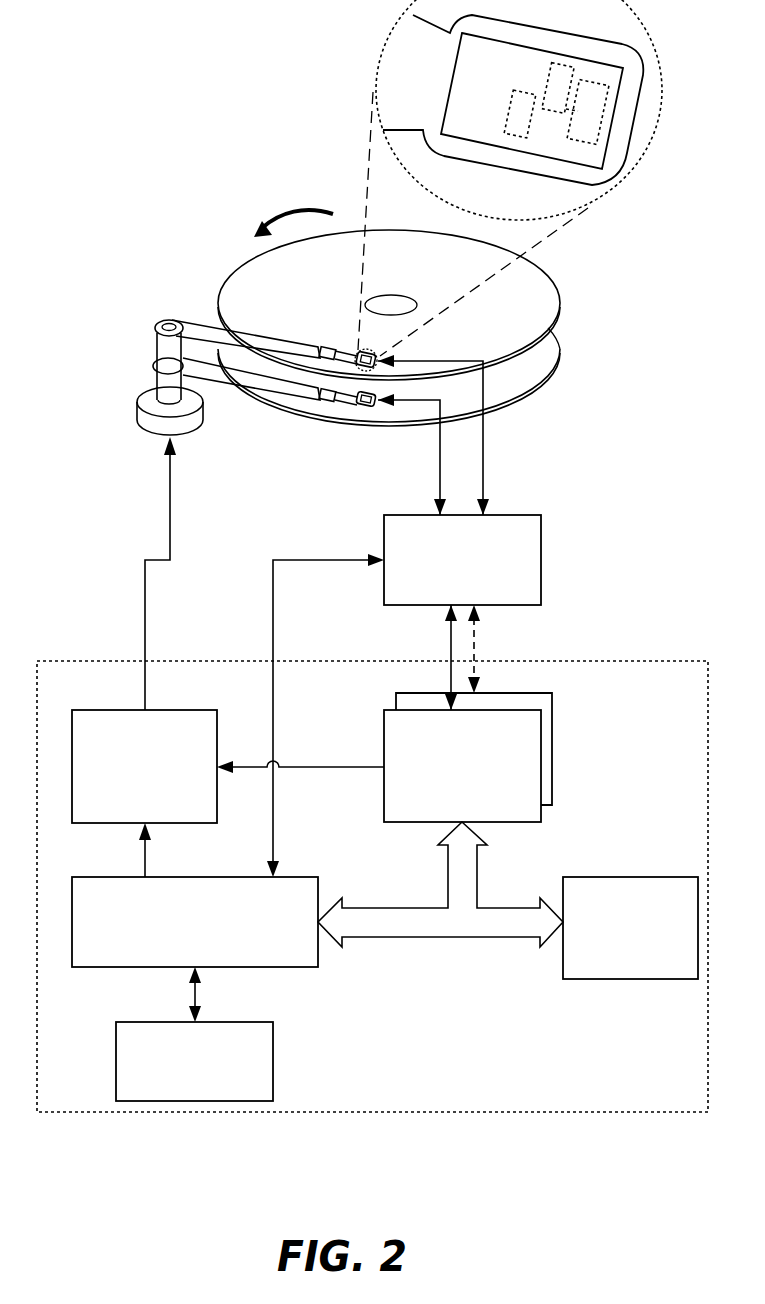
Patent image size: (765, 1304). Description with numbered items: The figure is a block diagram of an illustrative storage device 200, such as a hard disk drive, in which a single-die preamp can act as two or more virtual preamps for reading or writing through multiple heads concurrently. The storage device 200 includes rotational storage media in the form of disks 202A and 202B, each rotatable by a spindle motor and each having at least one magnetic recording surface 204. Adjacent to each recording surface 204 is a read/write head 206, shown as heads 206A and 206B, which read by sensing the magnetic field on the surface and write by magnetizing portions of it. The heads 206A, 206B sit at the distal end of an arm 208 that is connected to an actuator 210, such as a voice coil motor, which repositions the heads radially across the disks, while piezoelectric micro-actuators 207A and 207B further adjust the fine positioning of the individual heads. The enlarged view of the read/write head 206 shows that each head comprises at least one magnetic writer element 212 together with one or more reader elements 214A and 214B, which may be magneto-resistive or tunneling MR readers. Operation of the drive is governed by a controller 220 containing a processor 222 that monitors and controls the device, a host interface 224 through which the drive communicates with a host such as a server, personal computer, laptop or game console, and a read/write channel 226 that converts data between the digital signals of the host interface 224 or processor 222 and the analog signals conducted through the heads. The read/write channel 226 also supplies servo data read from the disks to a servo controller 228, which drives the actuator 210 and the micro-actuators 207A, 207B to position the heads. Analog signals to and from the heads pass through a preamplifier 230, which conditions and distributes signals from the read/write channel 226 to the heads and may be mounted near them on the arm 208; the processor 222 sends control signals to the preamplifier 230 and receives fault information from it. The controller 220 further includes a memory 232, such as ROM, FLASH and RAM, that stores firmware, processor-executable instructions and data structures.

The storage device 200 is at (84, 107).
The disk 202A is at (543, 307).
The disk 202B is at (547, 357).
The magnetic recording surface 204 is at (438, 267).
The read/write head 206 is at (480, 128).
The read/write head 206A is at (387, 339).
The read/write head 206B is at (363, 406).
The piezoelectric micro-actuator 207A is at (330, 347).
The piezoelectric micro-actuator 207B is at (327, 400).
The arm 208 is at (267, 338).
The actuator 210 is at (150, 397).
The magnetic writer element 212 is at (590, 97).
The reader element 214A is at (552, 87).
The reader element 214B is at (515, 113).
The controller 220 is at (702, 1098).
The processor 222 is at (210, 947).
The host interface 224 is at (630, 928).
The read/write channel 226 is at (477, 807).
The servo controller 228 is at (159, 805).
The preamplifier 230 is at (477, 583).
The memory 232 is at (194, 1061).